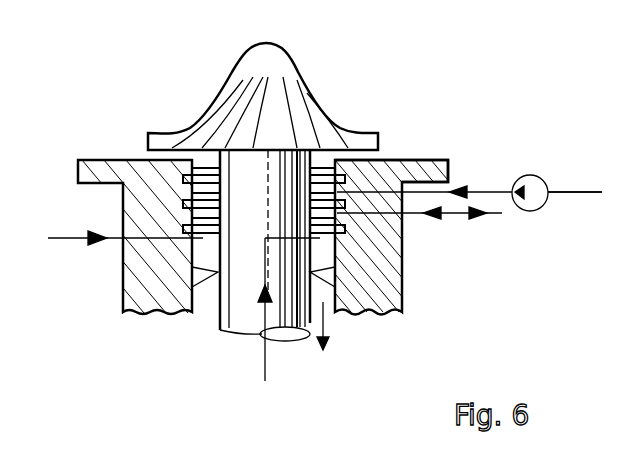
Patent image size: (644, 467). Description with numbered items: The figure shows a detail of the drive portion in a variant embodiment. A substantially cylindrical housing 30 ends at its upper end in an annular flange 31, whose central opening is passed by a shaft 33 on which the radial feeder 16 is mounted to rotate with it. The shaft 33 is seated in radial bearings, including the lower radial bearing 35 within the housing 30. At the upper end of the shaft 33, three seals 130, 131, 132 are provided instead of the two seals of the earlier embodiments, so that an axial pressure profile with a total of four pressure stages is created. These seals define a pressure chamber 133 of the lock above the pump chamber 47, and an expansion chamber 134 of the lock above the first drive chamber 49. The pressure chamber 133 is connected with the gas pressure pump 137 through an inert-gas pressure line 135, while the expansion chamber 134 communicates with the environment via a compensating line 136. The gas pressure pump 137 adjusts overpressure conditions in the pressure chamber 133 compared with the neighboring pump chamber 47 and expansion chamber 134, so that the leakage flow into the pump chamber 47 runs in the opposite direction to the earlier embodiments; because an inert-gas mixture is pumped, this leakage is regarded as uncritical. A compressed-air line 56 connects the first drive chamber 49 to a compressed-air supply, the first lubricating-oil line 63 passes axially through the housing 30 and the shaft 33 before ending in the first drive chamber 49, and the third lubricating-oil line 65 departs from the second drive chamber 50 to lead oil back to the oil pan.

The radial feeder 16 is at (278, 62).
The cylindrical housing 30 is at (405, 282).
The annular flange 31 is at (432, 175).
The shaft 33 is at (246, 310).
The lower radial bearing 35 is at (337, 272).
The pump chamber 47 is at (320, 165).
The first drive chamber 49 is at (210, 258).
The second drive chamber 50 is at (210, 293).
The compressed-air line 56 is at (73, 239).
The first lubricating-oil line 63 is at (263, 362).
The third lubricating-oil line 65 is at (326, 330).
The seal 130 is at (182, 178).
The seal 131 is at (192, 202).
The seal 132 is at (192, 227).
The pressure chamber of the lock 133 is at (323, 190).
The expansion chamber of the lock 134 is at (192, 213).
The inert-gas pressure line 135 is at (497, 192).
The compensating line 136 is at (502, 213).
The gas pressure pump 137 is at (539, 193).